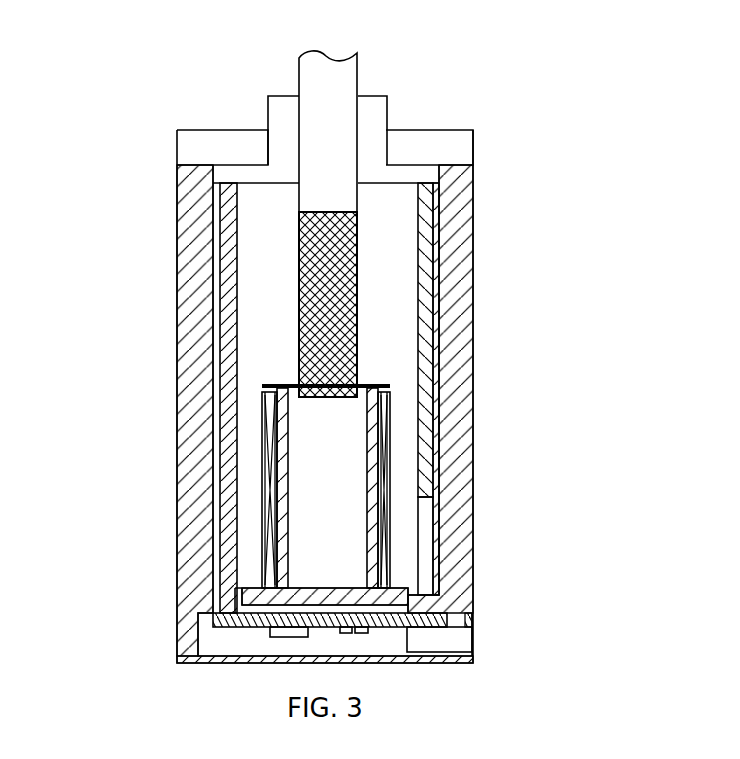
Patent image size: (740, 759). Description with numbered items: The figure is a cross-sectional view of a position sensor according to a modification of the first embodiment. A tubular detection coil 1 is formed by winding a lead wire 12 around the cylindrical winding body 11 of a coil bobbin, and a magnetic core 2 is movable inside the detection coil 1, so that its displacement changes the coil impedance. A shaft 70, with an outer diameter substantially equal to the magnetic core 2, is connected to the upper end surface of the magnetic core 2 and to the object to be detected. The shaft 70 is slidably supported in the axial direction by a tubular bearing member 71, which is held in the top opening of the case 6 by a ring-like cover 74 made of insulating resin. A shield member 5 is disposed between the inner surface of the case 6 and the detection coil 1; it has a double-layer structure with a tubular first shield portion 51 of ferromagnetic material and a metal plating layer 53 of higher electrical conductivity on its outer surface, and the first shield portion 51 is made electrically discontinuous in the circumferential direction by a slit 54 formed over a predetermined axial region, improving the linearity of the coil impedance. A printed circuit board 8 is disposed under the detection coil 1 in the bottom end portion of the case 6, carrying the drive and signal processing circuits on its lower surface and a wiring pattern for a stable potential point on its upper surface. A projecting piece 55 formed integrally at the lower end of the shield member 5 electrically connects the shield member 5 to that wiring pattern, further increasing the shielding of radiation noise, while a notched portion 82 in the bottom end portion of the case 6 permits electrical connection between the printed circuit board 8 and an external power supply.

The shaft 70 is at (328, 120).
The ring-like cover 74 is at (218, 146).
The tubular bearing member 71 is at (283, 133).
The magnetic core 2 is at (315, 240).
The case 6 is at (195, 229).
The shield member 5 is at (232, 298).
The winding body 11 is at (285, 408).
The detection coil 1 is at (265, 458).
The lead wire 12 is at (267, 548).
The projecting piece 55 is at (220, 603).
The first shield portion 51 is at (423, 437).
The metal plating layer 53 is at (438, 468).
The slit 54 is at (427, 540).
The printed circuit board 8 is at (435, 608).
The notched portion 82 is at (473, 637).